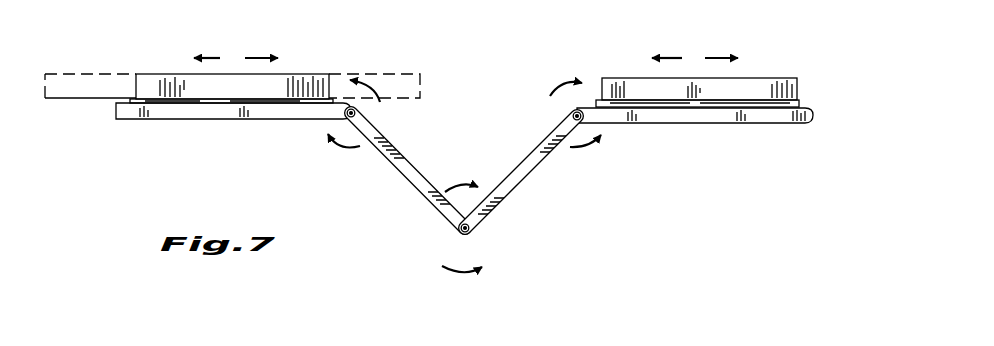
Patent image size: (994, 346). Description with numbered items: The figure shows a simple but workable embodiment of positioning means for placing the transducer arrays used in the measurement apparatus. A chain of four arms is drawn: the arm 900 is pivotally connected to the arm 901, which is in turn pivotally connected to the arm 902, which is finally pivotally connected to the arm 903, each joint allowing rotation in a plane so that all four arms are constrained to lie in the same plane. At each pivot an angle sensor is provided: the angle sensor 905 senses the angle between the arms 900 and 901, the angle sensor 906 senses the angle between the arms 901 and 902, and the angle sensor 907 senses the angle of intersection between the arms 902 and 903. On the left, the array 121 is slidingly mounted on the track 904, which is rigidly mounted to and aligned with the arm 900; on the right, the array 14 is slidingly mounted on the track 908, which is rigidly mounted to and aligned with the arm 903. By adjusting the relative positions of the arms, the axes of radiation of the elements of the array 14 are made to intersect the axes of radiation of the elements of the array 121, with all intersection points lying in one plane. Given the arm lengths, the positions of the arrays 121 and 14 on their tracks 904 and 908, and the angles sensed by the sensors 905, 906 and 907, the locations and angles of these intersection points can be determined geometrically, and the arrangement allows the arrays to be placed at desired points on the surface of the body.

The array 14 is at (766, 78).
The array 121 is at (297, 78).
The arm 900 is at (184, 119).
The arm 901 is at (395, 171).
The arm 902 is at (510, 196).
The arm 903 is at (796, 131).
The track 904 is at (117, 103).
The angle sensor 905 is at (360, 113).
The angle sensor 906 is at (455, 233).
The angle sensor 907 is at (562, 112).
The track 908 is at (802, 106).